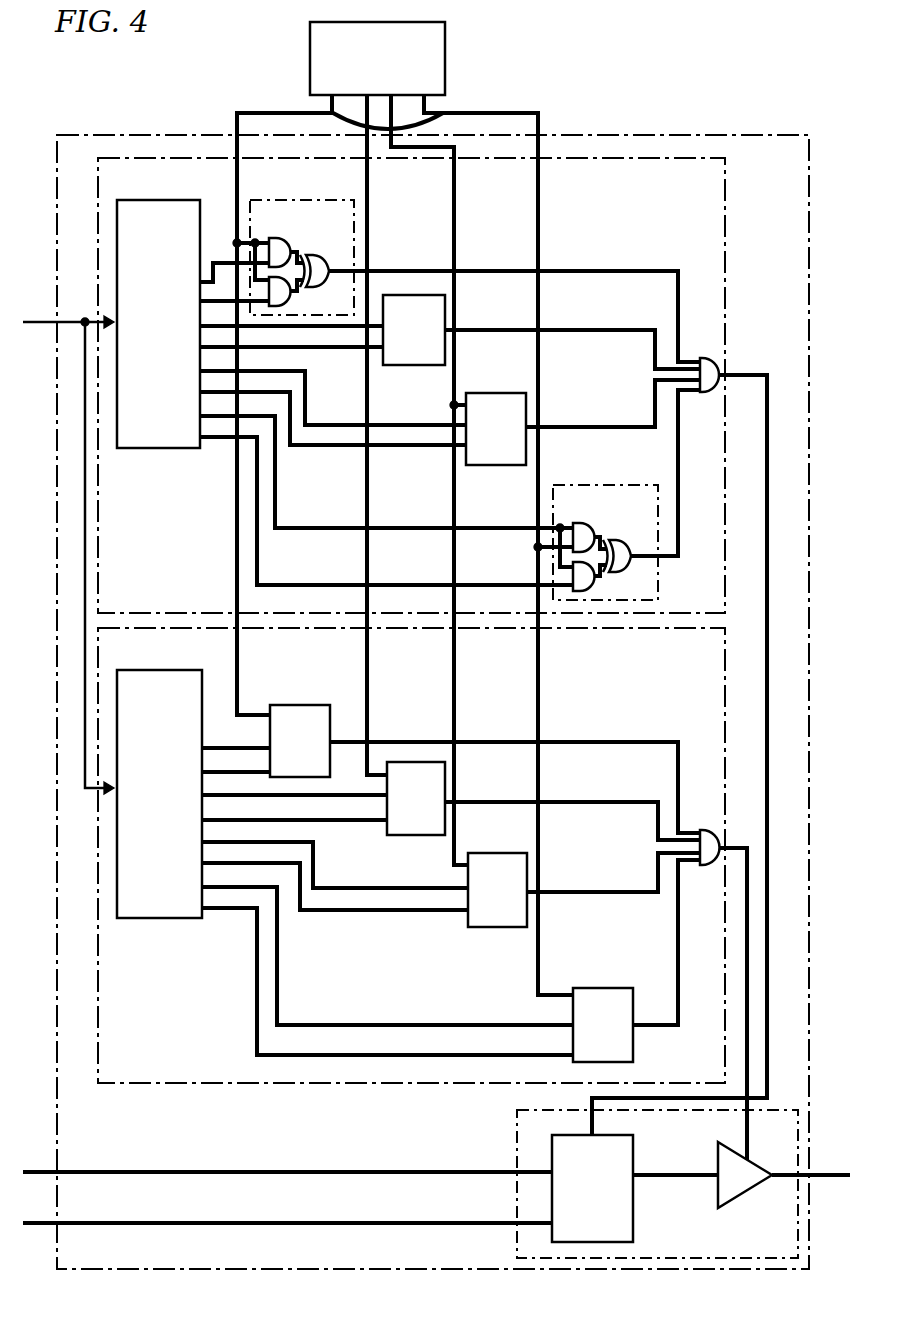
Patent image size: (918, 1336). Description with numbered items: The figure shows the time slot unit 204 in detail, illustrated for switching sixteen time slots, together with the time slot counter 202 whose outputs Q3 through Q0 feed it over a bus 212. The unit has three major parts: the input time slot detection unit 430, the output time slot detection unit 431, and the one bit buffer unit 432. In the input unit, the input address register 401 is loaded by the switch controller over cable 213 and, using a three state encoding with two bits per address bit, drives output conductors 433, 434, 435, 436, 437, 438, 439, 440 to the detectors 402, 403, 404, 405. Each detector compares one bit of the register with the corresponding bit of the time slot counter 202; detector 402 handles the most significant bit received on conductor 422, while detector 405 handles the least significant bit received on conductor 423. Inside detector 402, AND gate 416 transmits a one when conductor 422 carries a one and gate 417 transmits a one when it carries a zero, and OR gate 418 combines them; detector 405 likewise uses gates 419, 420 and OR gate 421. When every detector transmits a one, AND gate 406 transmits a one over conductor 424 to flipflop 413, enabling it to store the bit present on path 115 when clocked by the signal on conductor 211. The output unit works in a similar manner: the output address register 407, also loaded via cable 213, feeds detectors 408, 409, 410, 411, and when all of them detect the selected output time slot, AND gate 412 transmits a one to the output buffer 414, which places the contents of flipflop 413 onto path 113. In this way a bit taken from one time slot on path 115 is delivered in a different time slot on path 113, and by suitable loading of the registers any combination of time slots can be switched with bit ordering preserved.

The time slot counter 202 is at (446, 48).
The time slot unit 204 is at (783, 135).
The counter output bus 212 is at (430, 115).
The conductor 422 is at (262, 113).
The conductor 423 is at (510, 115).
The conductor 424 is at (770, 725).
The input time slot detection unit 430 is at (725, 228).
The output time slot detection unit 431 is at (725, 655).
The buffer unit 432 is at (517, 1145).
The cable 213 is at (84, 318).
The input address register 401 is at (164, 200).
The detector 402 is at (475, 265).
The detector 403 is at (395, 365).
The detector 404 is at (484, 393).
The detector 405 is at (617, 496).
The AND gate 406 is at (708, 360).
The output address register 407 is at (168, 670).
The detector 408 is at (298, 705).
The detector 409 is at (415, 835).
The detector 410 is at (482, 853).
The detector 411 is at (597, 988).
The AND gate 412 is at (708, 830).
The flipflop 413 is at (633, 1160).
The output buffer 414 is at (718, 1187).
The AND gate 416 is at (292, 228).
The gate 417 is at (284, 298).
The OR gate 418 is at (305, 257).
The gate 419 is at (595, 514).
The gate 420 is at (587, 584).
The OR gate 421 is at (616, 543).
The conductor 433 is at (228, 262).
The conductor 434 is at (240, 300).
The conductor 435 is at (325, 330).
The conductor 436 is at (358, 351).
The conductor 437 is at (312, 425).
The conductor 438 is at (310, 446).
The conductor 439 is at (342, 522).
The conductor 440 is at (335, 578).
The conductor 211 is at (125, 1170).
The path 115 is at (53, 1222).
The path 113 is at (810, 1175).